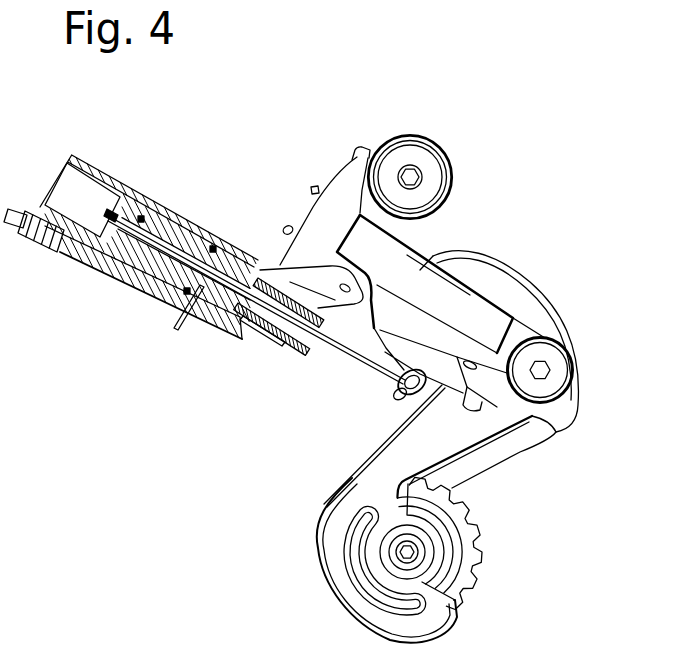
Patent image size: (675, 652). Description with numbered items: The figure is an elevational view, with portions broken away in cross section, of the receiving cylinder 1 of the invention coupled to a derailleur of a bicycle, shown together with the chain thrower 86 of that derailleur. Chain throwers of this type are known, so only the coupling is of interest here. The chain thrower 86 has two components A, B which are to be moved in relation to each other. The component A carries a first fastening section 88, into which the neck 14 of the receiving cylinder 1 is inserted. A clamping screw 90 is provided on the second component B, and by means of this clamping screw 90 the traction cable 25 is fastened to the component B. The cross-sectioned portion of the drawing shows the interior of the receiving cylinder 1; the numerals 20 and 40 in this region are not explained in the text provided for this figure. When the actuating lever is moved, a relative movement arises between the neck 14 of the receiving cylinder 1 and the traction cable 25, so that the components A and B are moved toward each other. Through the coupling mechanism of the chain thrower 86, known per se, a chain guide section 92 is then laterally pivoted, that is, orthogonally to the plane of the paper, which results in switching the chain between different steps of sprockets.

The receiving cylinder 1 is at (123, 168).
The adjuster body / spring housing 20 is at (170, 226).
The component A is at (276, 275).
The chain thrower 86 is at (531, 244).
The adjusting rod 40 is at (167, 292).
The first fastening section 88 is at (258, 330).
The neck 14 is at (300, 320).
The traction cable 25 is at (333, 348).
The component B is at (385, 351).
The clamping screw 90 is at (398, 393).
The chain guide section 92 is at (458, 436).